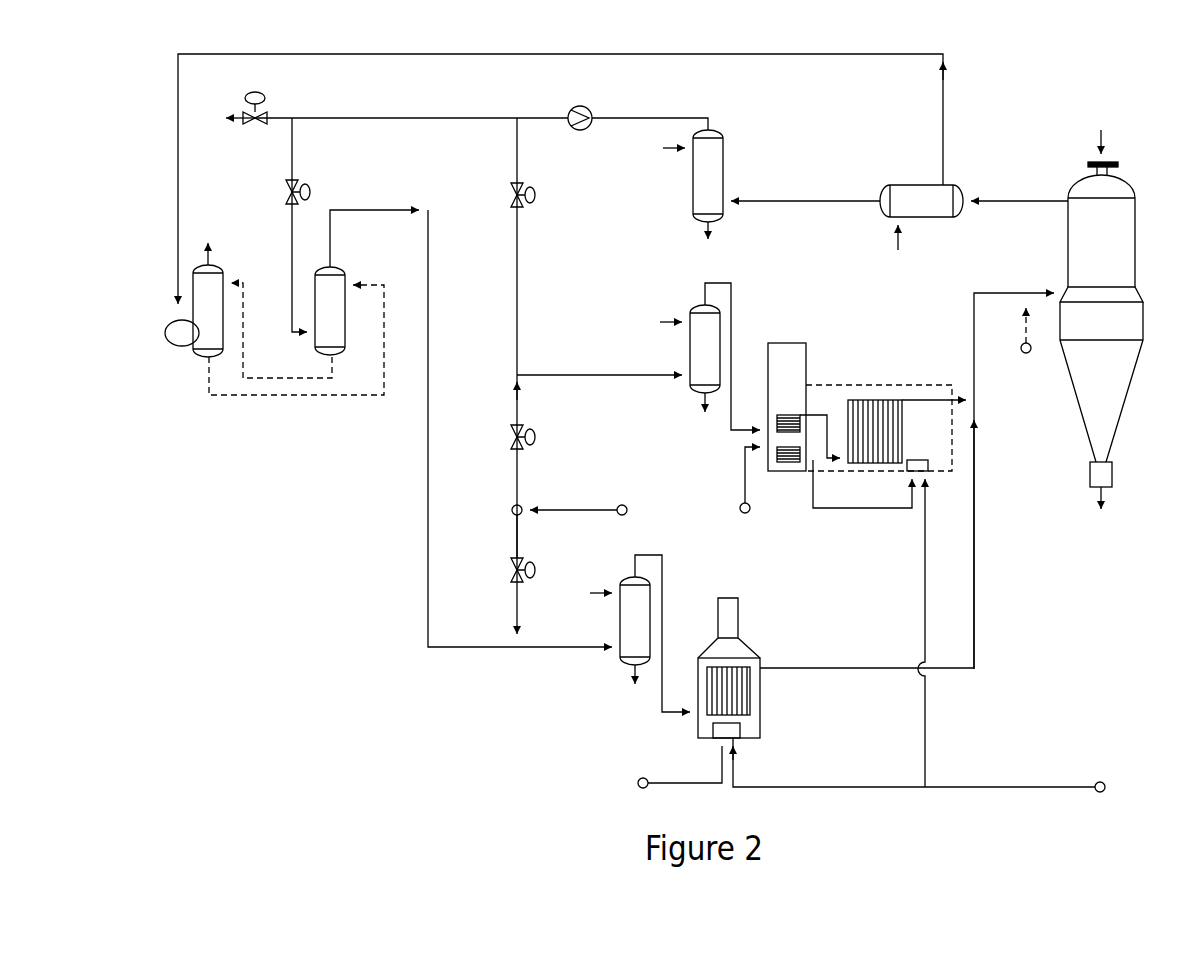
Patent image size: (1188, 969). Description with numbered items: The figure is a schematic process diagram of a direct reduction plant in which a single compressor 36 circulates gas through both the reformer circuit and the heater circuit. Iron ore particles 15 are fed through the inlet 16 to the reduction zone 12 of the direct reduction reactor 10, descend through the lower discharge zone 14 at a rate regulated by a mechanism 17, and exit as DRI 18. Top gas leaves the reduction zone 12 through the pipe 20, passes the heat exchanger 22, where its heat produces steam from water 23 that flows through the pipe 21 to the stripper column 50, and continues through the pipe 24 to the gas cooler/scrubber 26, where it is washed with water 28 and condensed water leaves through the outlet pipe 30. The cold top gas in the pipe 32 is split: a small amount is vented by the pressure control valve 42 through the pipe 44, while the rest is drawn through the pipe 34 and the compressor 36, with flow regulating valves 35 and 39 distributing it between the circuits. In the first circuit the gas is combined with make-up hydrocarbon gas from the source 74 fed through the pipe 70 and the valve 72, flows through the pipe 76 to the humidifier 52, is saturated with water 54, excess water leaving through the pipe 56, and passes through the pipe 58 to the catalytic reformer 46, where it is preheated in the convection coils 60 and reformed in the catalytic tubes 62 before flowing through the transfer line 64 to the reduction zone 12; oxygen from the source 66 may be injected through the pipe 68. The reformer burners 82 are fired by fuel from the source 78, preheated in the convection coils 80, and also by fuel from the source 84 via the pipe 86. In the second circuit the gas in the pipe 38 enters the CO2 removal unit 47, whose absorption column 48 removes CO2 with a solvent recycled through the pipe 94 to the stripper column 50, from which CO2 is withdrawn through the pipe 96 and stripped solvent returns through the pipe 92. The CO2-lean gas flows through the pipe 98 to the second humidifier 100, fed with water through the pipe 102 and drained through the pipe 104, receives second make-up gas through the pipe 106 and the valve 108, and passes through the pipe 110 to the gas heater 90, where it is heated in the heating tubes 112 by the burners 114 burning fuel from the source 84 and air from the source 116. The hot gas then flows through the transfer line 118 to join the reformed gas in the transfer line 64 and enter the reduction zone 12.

The direct reduction reactor 10 is at (1118, 308).
The reduction zone 12 is at (1088, 245).
The lower discharge zone 14 is at (1088, 393).
The iron ore particles 15 is at (1098, 135).
The inlet 16 is at (1108, 170).
The discharge rate control mechanism 17 is at (1112, 478).
The DRI 18 is at (1098, 498).
The top gas pipe 20 is at (1047, 198).
The steam pipe 21 is at (945, 88).
The heat exchanger 22 is at (918, 183).
The water 23 is at (898, 238).
The pipe 24 is at (868, 203).
The gas cooler/scrubber 26 is at (700, 200).
The water 28 is at (680, 150).
The outlet pipe 30 is at (705, 235).
The pipe 32 is at (672, 115).
The pipe 34 is at (520, 136).
The flow regulating valve 35 is at (530, 199).
The compressor 36 is at (575, 108).
The pipe 38 is at (296, 137).
The flow regulating valve 39 is at (312, 192).
The pressure control valve 42 is at (250, 113).
The vent pipe 44 is at (230, 125).
The catalytic reformer 46 is at (880, 385).
The CO2 removal unit 47 is at (281, 347).
The CO2 absorption column 48 is at (335, 328).
The stripper column 50 is at (212, 336).
The humidifier 52 is at (690, 360).
The water 54 is at (675, 322).
The pipe 56 is at (697, 410).
The pipe 58 is at (733, 320).
The convection coils 60 is at (778, 415).
The catalytic tubes 62 is at (900, 385).
The transfer line 64 is at (973, 338).
The oxygen source 66 is at (1032, 348).
The oxygen pipe 68 is at (1026, 322).
The make-up gas pipe 70 is at (515, 400).
The valve 72 is at (513, 432).
The make-up gas source 74 is at (620, 503).
The pipe 76 is at (558, 372).
The fuel source 78 is at (750, 512).
The convection coils 80 is at (797, 462).
The reformer burners 82 is at (917, 460).
The fuel source 84 is at (1102, 782).
The fuel pipe 86 is at (926, 750).
The gas heater 90 is at (740, 650).
The solvent return pipe 92 is at (220, 400).
The solvent pipe 94 is at (300, 377).
The CO2 pipe 96 is at (212, 250).
The pipe 98 is at (430, 360).
The second humidifier 100 is at (620, 628).
The water pipe 102 is at (598, 590).
The pipe 104 is at (630, 680).
The make-up gas pipe 106 is at (515, 528).
The valve 108 is at (515, 578).
The pipe 110 is at (664, 600).
The heating tubes 112 is at (752, 680).
The burners 114 is at (713, 733).
The air source 116 is at (642, 778).
The transfer line 118 is at (974, 578).